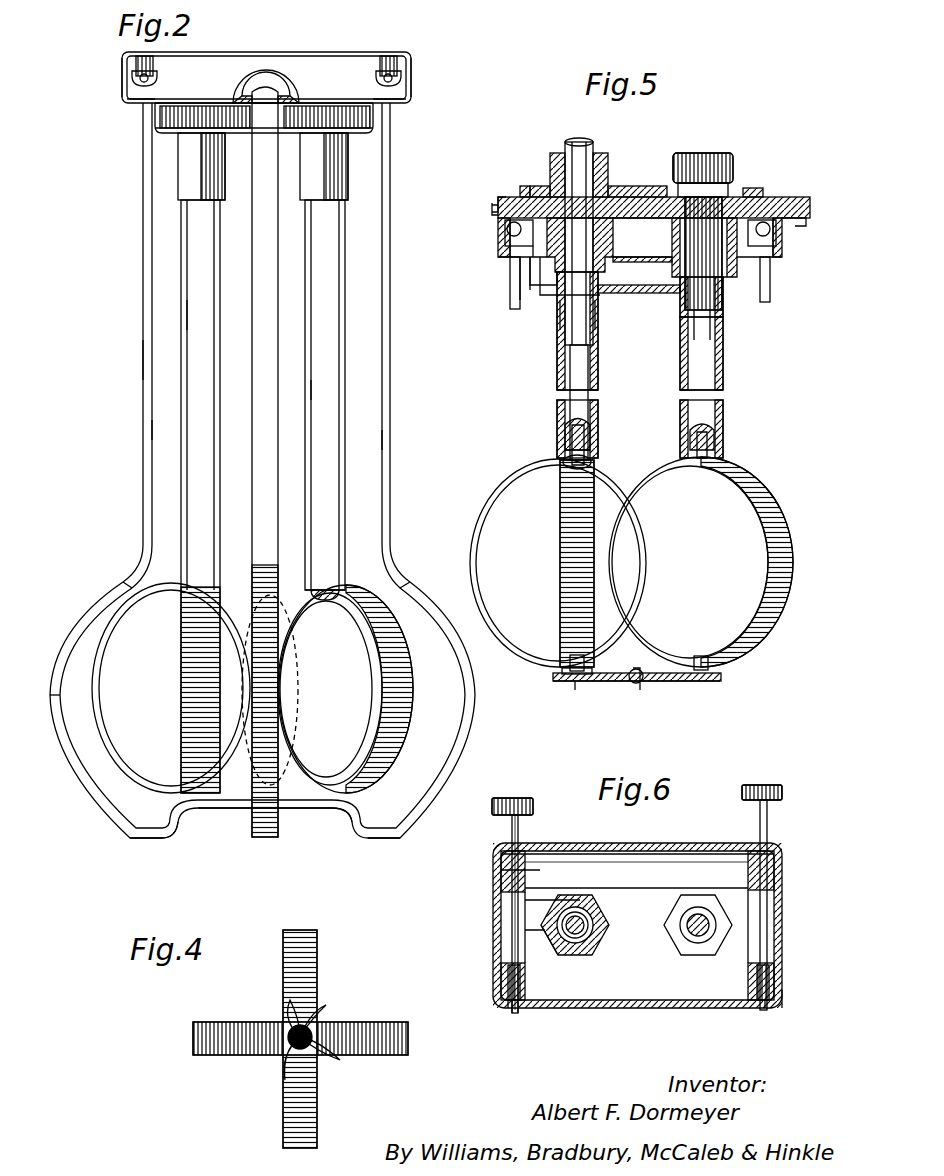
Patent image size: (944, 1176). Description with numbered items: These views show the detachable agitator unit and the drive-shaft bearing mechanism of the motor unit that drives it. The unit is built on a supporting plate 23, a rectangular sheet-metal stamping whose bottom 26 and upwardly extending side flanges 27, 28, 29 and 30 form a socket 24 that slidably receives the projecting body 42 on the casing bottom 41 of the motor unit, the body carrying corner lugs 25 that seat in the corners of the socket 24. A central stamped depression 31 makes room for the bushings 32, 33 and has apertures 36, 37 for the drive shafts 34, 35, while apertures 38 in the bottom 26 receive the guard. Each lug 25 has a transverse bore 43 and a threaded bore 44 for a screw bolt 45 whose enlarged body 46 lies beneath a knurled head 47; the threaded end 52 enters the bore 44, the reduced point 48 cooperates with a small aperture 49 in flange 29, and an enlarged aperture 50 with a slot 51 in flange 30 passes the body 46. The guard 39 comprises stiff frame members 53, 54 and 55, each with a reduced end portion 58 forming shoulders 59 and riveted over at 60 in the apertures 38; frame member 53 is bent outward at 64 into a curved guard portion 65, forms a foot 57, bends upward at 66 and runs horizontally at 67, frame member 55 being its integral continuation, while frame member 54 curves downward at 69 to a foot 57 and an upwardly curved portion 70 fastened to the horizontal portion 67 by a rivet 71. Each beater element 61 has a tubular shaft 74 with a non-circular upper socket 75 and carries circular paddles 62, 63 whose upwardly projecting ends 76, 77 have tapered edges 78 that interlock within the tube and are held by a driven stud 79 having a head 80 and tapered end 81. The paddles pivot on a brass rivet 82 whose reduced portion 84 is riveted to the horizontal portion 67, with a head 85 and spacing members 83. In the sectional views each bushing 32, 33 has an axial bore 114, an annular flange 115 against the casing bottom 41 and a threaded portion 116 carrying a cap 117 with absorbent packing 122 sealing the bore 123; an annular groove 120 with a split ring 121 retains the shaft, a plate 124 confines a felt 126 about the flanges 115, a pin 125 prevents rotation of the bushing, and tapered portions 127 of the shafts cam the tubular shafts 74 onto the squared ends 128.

In FIG. 2, the supporting plate 23 is at (405, 55).
In FIG. 5, the supporting plate 23 is at (522, 252).
In FIG. 2, the socket 24 is at (330, 72).
In FIG. 5, the socket 24 is at (786, 196).
In FIG. 6, the socket 24 is at (712, 852).
In FIG. 5, the lugs 25 is at (500, 232).
In FIG. 6, the lugs 25 is at (501, 880).
In FIG. 2, the bottom 26 is at (360, 118).
In FIG. 5, the bottom 26 is at (650, 300).
In FIG. 5, the side flange 27 is at (800, 214).
In FIG. 6, the side flange 27 is at (783, 1000).
In FIG. 5, the side flange 28 is at (500, 222).
In FIG. 6, the side flange 28 is at (501, 930).
In FIG. 6, the side flange 29 is at (656, 1010).
In FIG. 2, the side flange 30 is at (130, 112).
In FIG. 6, the side flange 30 is at (650, 851).
In FIG. 2, the stamped depression 31 is at (155, 128).
In FIG. 5, the bushing 32 is at (614, 188).
In FIG. 5, the bushing 33 is at (705, 158).
In FIG. 5, the drive shaft 34 is at (576, 140).
In FIG. 6, the drive shaft 34 is at (590, 915).
In FIG. 5, the drive shaft 35 is at (728, 178).
In FIG. 5, the aperture 36 is at (556, 280).
In FIG. 5, the aperture 37 is at (724, 290).
In FIG. 5, the apertures 38 is at (535, 265).
In FIG. 2, the guard 39 is at (134, 282).
In FIG. 5, the bottom 41 is at (498, 220).
In FIG. 6, the projecting body 42 is at (605, 860).
In FIG. 6, the transverse bore 43 is at (501, 862).
In FIG. 6, the threaded bore 44 is at (505, 1000).
In FIG. 5, the screw bolt 45 is at (505, 236).
In FIG. 6, the screw bolt 45 is at (501, 908).
In FIG. 6, the enlarged body 46 is at (510, 830).
In FIG. 6, the knurled head 47 is at (492, 808).
In FIG. 6, the point 48 is at (510, 1012).
In FIG. 2, the apertures 49 is at (133, 72).
In FIG. 6, the apertures 49 is at (518, 1008).
In FIG. 2, the apertures 50 is at (125, 98).
In FIG. 6, the apertures 50 is at (535, 851).
In FIG. 2, the slots 51 is at (120, 58).
In FIG. 6, the threaded end 52 is at (501, 978).
In FIG. 2, the frame member 53 is at (142, 364).
In FIG. 2, the frame member 54 is at (255, 428).
In FIG. 2, the frame member 55 is at (384, 441).
In FIG. 2, the feet 57 is at (132, 842).
In FIG. 2, the end portion 58 is at (282, 92).
In FIG. 2, the shoulders 59 is at (250, 88).
In FIG. 2, the riveted end 60 is at (268, 88).
In FIG. 2, the beater element 61 is at (172, 466).
In FIG. 2, the paddle 62 is at (100, 650).
In FIG. 5, the paddle 62 is at (520, 470).
In FIG. 4, the paddle 62 is at (232, 1024).
In FIG. 2, the paddle 63 is at (192, 714).
In FIG. 5, the paddle 63 is at (558, 555).
In FIG. 4, the paddle 63 is at (318, 940).
In FIG. 2, the outward bend 64 is at (138, 548).
In FIG. 2, the curved guard portion 65 is at (120, 592).
In FIG. 2, the upward bend 66 is at (178, 832).
In FIG. 2, the horizontal portion 67 is at (228, 815).
In FIG. 5, the horizontal portion 67 is at (608, 684).
In FIG. 2, the downward curve 69 is at (268, 716).
In FIG. 5, the upwardly curved portion 70 is at (645, 684).
In FIG. 5, the rivet 71 is at (640, 692).
In FIG. 2, the tubular shaft 74 is at (190, 320).
In FIG. 5, the tubular shaft 74 is at (682, 380).
In FIG. 2, the non-circular portion 75 is at (185, 180).
In FIG. 5, the non-circular portion 75 is at (722, 350).
In FIG. 5, the upwardly projecting end 76 is at (562, 432).
In FIG. 4, the upwardly projecting end 76 is at (290, 1002).
In FIG. 5, the upwardly projecting end 77 is at (596, 430).
In FIG. 4, the upwardly projecting end 77 is at (318, 1060).
In FIG. 4, the tapered edges 78 is at (330, 1030).
In FIG. 5, the driven member 79 is at (562, 452).
In FIG. 4, the driven member 79 is at (315, 1018).
In FIG. 2, the head 80 is at (332, 602).
In FIG. 5, the head 80 is at (575, 470).
In FIG. 5, the tapered end 81 is at (558, 412).
In FIG. 5, the rivet 82 is at (560, 672).
In FIG. 5, the spacing members 83 is at (556, 680).
In FIG. 5, the reduced portion 84 is at (578, 690).
In FIG. 5, the head 85 is at (572, 660).
In FIG. 5, the axial bore 114 is at (520, 196).
In FIG. 5, the annular flange 115 is at (556, 186).
In FIG. 5, the threaded portion 116 is at (616, 234).
In FIG. 5, the cap 117 is at (616, 264).
In FIG. 6, the cap 117 is at (580, 900).
In FIG. 5, the annular groove 120 is at (548, 272).
In FIG. 6, the annular groove 120 is at (585, 912).
In FIG. 5, the split ring 121 is at (552, 302).
In FIG. 6, the split ring 121 is at (566, 952).
In FIG. 5, the absorbent packing 122 is at (645, 294).
In FIG. 5, the bore 123 is at (562, 325).
In FIG. 6, the bore 123 is at (688, 958).
In FIG. 5, the plate 124 is at (534, 188).
In FIG. 5, the pin 125 is at (645, 186).
In FIG. 5, the absorbent felt 126 is at (762, 198).
In FIG. 5, the tapered portions 127 is at (640, 375).
In FIG. 5, the non-circular ends 128 is at (722, 318).
In FIG. 6, the non-circular ends 128 is at (688, 930).